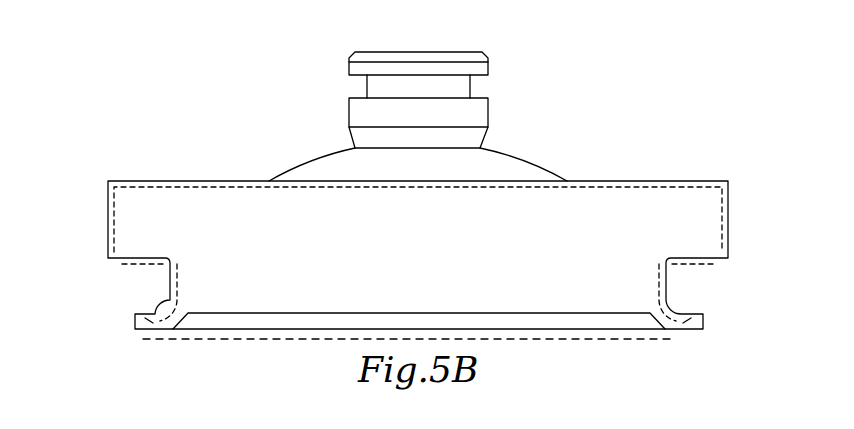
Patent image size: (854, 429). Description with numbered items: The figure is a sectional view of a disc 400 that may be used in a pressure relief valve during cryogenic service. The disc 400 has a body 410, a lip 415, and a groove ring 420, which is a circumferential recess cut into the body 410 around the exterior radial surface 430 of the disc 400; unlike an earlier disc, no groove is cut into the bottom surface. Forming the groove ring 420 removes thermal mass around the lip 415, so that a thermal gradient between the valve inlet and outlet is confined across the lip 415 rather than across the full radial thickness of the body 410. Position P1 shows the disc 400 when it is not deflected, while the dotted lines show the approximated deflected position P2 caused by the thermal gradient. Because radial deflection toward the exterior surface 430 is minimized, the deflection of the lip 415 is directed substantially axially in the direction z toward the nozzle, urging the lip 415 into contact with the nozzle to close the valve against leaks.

The disc 400 is at (578, 93).
The body 410 is at (534, 166).
The lip 415 is at (687, 338).
The groove ring 420 is at (668, 276).
The exterior radial surface 430 is at (729, 220).
The position P1 is at (152, 181).
The position P2 is at (108, 240).
The direction Z z is at (137, 293).